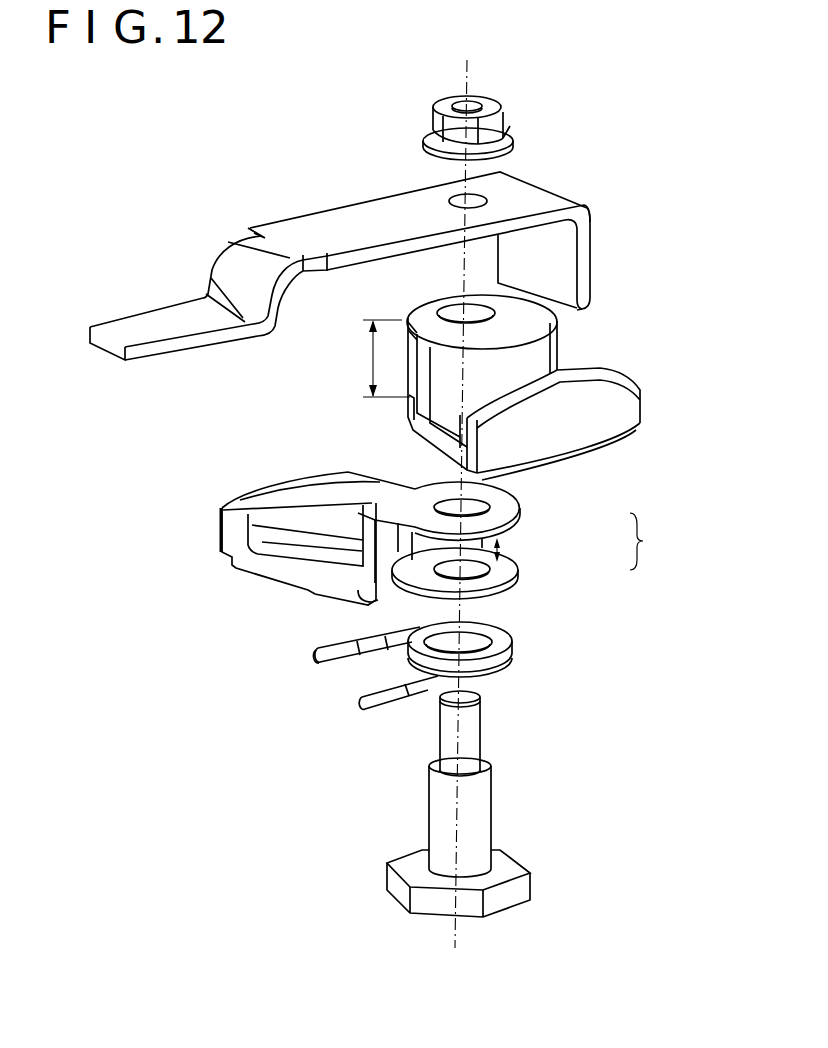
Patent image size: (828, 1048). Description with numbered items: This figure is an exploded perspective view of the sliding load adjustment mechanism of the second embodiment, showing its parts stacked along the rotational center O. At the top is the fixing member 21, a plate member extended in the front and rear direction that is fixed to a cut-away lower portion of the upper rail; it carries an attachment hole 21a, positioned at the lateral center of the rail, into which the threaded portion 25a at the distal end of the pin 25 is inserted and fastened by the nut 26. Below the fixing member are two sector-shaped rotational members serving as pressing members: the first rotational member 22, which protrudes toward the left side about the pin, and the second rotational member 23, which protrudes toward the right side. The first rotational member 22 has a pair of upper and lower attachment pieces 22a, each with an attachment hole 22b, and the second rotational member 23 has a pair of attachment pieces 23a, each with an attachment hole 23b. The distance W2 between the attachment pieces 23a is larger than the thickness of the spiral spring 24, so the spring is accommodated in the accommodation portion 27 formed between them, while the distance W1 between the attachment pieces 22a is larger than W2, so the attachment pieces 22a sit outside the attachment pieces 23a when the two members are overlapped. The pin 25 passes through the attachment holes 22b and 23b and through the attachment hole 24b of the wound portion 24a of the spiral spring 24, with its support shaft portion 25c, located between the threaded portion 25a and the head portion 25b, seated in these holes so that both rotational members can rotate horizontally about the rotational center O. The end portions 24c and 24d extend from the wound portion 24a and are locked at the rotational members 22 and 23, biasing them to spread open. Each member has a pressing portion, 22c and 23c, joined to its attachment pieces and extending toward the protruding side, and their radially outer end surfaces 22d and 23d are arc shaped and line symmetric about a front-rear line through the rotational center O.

The rotational center O is at (466, 490).
The fixing member 21 is at (594, 205).
The attachment hole 21a is at (464, 197).
The first rotational member 22 is at (557, 342).
The attachment pieces 22a is at (410, 314).
The attachment hole 22b is at (455, 311).
The pressing portion 22c is at (615, 369).
The end surface 22d is at (611, 428).
The second rotational member 23 is at (250, 578).
The attachment pieces 23a is at (521, 510).
The attachment hole 23b is at (474, 507).
The pressing portion 23c is at (285, 493).
The end surface 23d is at (218, 537).
The spiral spring 24 is at (513, 653).
The wound portion 24a is at (511, 622).
The attachment hole 24b is at (417, 660).
The end portion 24c is at (363, 702).
The end portion 24d is at (318, 658).
The pin 25 is at (430, 823).
The threaded portion 25a is at (485, 727).
The head portion 25b is at (530, 884).
The support shaft portion 25c is at (490, 810).
The nut 26 is at (510, 121).
The accommodation portion 27 is at (651, 541).
The distance between attachment pieces of the first rotational member W1 is at (374, 358).
The distance between attachment pieces of the second rotational member W2 is at (521, 547).